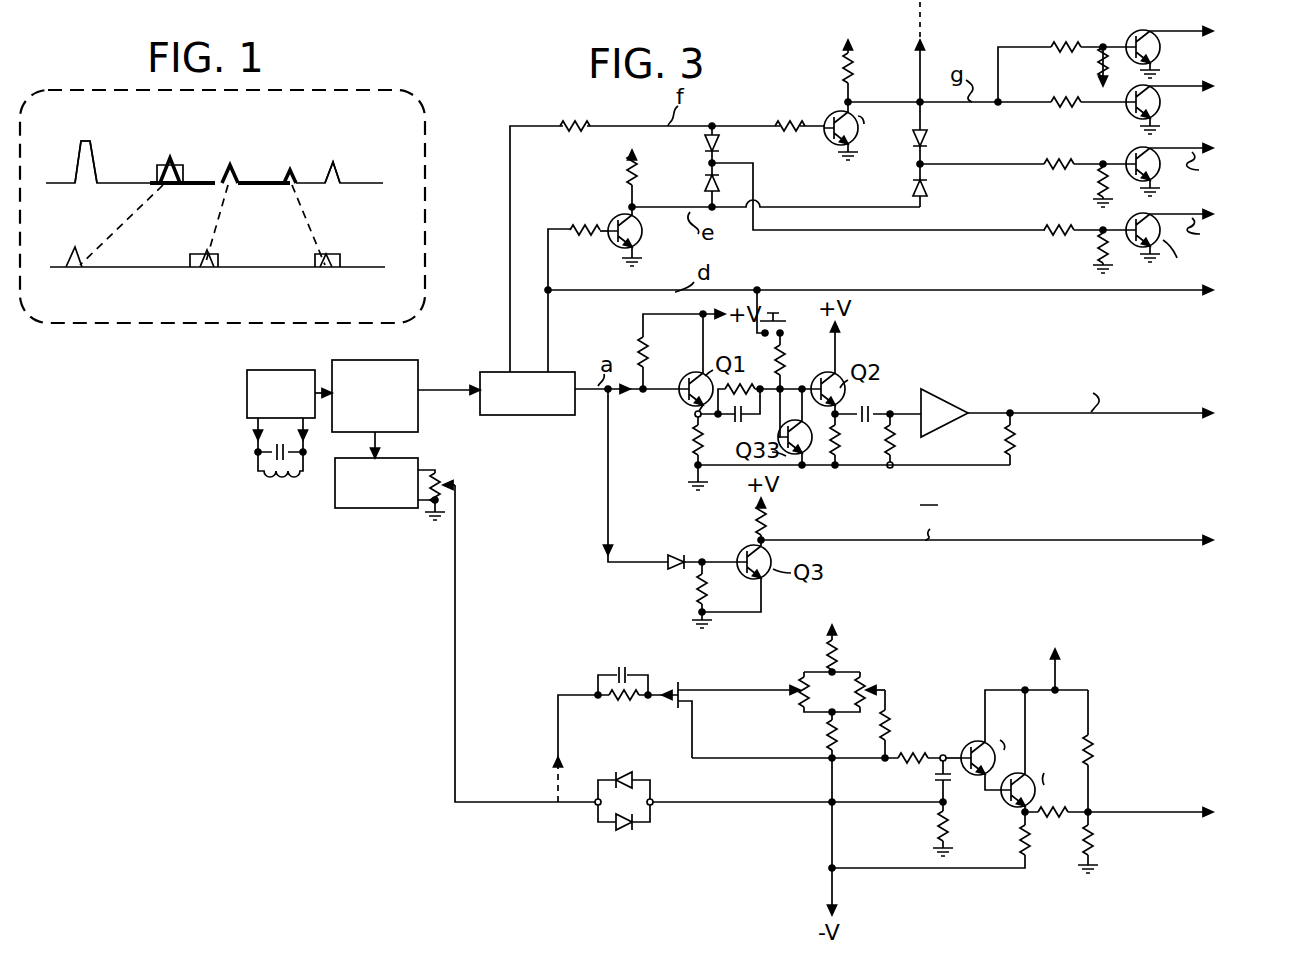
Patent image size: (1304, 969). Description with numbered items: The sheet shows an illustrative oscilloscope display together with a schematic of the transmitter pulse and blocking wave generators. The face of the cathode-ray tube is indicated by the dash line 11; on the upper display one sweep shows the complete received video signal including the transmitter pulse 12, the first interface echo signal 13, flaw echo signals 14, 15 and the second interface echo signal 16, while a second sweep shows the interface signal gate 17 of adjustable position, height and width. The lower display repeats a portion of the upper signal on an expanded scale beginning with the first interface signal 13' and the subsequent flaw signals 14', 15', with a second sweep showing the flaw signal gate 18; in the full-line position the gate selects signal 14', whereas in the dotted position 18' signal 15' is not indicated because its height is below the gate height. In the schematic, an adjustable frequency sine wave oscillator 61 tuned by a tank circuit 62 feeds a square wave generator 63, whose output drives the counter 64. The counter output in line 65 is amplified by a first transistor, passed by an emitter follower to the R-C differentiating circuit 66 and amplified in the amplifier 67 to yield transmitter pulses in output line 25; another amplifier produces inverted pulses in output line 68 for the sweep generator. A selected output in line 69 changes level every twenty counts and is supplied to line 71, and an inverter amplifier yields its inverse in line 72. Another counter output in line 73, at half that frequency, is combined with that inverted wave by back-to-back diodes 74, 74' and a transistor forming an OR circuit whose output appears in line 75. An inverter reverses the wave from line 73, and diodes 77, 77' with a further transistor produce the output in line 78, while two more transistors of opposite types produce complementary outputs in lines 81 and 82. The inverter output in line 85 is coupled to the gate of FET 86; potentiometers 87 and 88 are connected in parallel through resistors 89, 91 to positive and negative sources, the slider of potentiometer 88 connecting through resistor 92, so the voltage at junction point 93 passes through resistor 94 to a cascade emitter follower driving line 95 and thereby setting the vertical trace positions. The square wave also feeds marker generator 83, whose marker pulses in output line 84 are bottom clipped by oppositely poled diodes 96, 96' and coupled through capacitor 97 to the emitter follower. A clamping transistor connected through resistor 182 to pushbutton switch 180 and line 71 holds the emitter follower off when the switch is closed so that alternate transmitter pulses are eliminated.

In FIG. 1, the dash line 11 is at (344, 96).
In FIG. 1, the transmitter pulse 12 is at (97, 164).
In FIG. 1, the first interface echo signal 13 is at (164, 148).
In FIG. 1, the echo signal 14 is at (251, 157).
In FIG. 1, the echo signal 15 is at (308, 151).
In FIG. 1, the second interface echo signal 16 is at (336, 162).
In FIG. 1, the interface signal gate 17 is at (184, 166).
In FIG. 1, the flaw signal gate 18 is at (233, 244).
In FIG. 1, the first interface signal 13' is at (61, 238).
In FIG. 1, the flaw signal 14' is at (182, 237).
In FIG. 1, the flaw signal 15' is at (342, 234).
In FIG. 1, the dotted position of flaw gate 18' is at (366, 245).
In FIG. 3, the output line 25 is at (1125, 414).
In FIG. 3, the adjustable frequency sine wave oscillator 61 is at (247, 399).
In FIG. 3, the tank circuit 62 is at (255, 458).
In FIG. 3, the square wave generator 63 is at (418, 408).
In FIG. 3, the counter 64 is at (534, 416).
In FIG. 3, the line 65 is at (583, 396).
In FIG. 3, the R-C differentiating circuit 66 is at (879, 426).
In FIG. 3, the amplifier 67 is at (947, 396).
In FIG. 3, the output line 68 is at (998, 542).
In FIG. 3, the line 69 is at (548, 283).
In FIG. 3, the line 71 is at (796, 290).
In FIG. 3, the line 72 is at (679, 206).
In FIG. 3, the line 73 is at (508, 323).
In FIG. 3, the diode 74 is at (739, 144).
In FIG. 3, the diode 74' is at (684, 178).
In FIG. 3, the line 75 is at (1181, 214).
In FIG. 3, the diode 77 is at (949, 134).
In FIG. 3, the diode 77' is at (952, 186).
In FIG. 3, the line 78 is at (1181, 148).
In FIG. 3, the line 81 is at (1185, 88).
In FIG. 3, the line 82 is at (1166, 32).
In FIG. 3, the marker generator 83 is at (359, 508).
In FIG. 3, the output line 84 is at (458, 618).
In FIG. 3, the line 85 is at (919, 84).
In FIG. 3, the FET 86 is at (682, 684).
In FIG. 3, the potentiometer 87 is at (803, 687).
In FIG. 3, the potentiometer 88 is at (866, 679).
In FIG. 3, the resistor 89 is at (843, 654).
In FIG. 3, the resistor 91 is at (822, 744).
In FIG. 3, the resistor 92 is at (890, 721).
In FIG. 3, the junction point 93 is at (872, 762).
In FIG. 3, the resistor 94 is at (909, 758).
In FIG. 3, the line 95 is at (1154, 812).
In FIG. 3, the diode 96 is at (629, 763).
In FIG. 3, the diode 96' is at (632, 840).
In FIG. 3, the coupling capacitor 97 is at (935, 784).
In FIG. 3, the pushbutton switch 180 is at (804, 318).
In FIG. 3, the resistor 182 is at (783, 355).